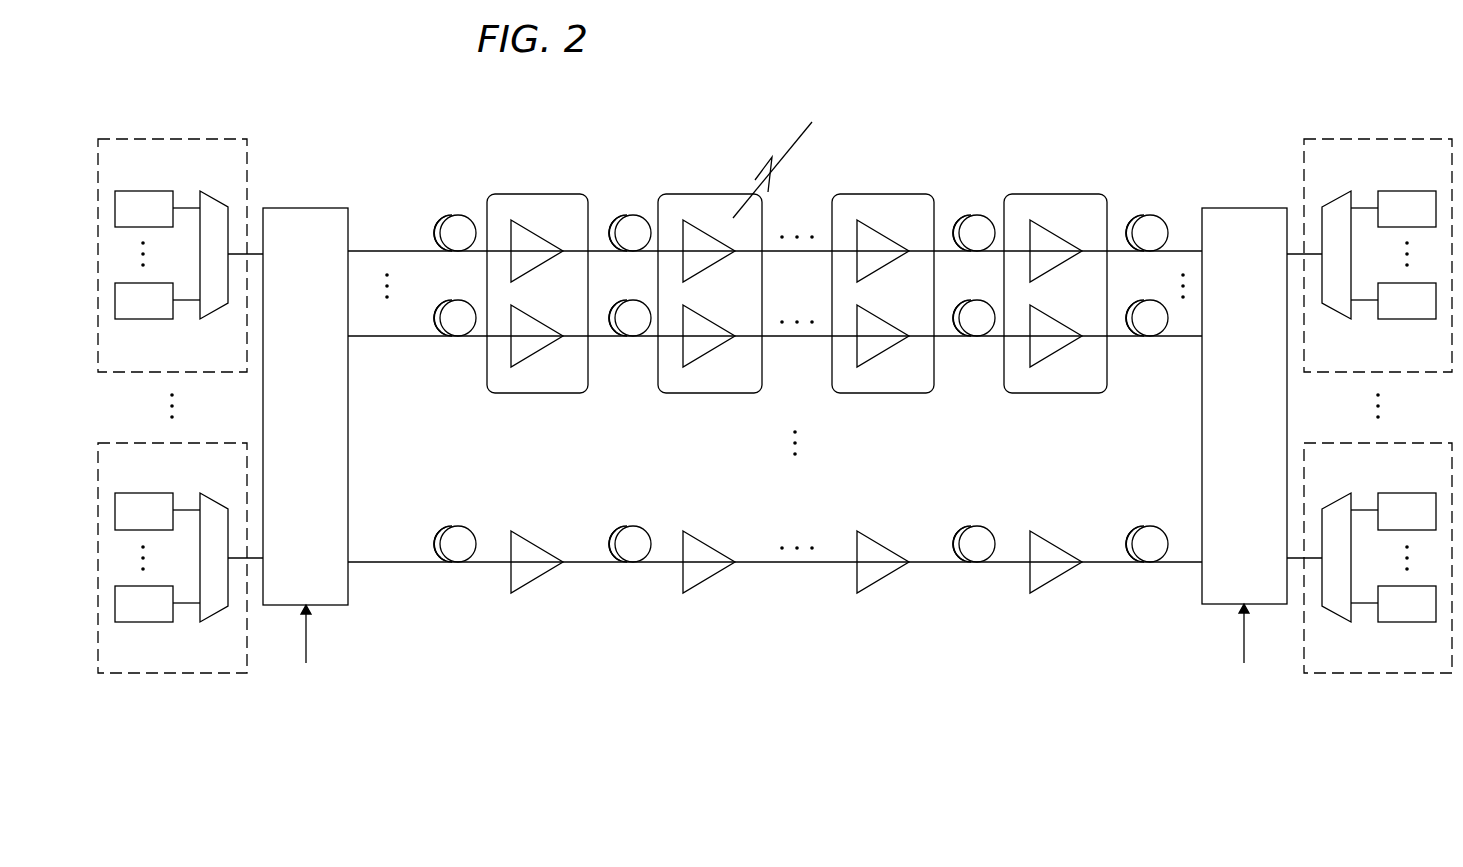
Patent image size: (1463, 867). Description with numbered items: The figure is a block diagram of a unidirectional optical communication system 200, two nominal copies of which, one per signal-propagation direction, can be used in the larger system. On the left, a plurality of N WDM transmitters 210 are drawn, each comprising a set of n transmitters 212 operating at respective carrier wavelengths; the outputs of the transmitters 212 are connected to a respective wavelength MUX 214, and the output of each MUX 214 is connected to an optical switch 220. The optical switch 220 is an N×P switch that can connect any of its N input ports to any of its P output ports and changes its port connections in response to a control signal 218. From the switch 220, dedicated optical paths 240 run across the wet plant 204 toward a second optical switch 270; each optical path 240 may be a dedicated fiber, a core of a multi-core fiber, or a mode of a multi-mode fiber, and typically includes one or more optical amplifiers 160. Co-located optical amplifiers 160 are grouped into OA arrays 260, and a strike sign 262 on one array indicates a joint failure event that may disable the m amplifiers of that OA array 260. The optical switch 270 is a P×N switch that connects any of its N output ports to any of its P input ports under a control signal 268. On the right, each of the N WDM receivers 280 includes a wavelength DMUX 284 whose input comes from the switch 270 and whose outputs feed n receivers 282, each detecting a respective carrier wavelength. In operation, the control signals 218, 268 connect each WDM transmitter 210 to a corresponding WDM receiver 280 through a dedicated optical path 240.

The unidirectional optical communication system 200 is at (554, 93).
The wet plant 204 is at (907, 126).
The WDM transmitter 210 is at (168, 702).
The transmitter 212 is at (130, 191).
The wavelength MUX 214 is at (206, 192).
The control signal 218 is at (306, 648).
The optical switch 220 is at (288, 208).
The optical path 240 is at (385, 250).
The OA array 260 is at (707, 195).
The strike sign 262 is at (814, 128).
The control signal 268 is at (1243, 645).
The optical switch 270 is at (1226, 208).
The WDM receiver 280 is at (1372, 139).
The receiver 282 is at (1396, 191).
The wavelength DMUX 284 is at (1337, 192).
The optical amplifier 160 is at (524, 278).